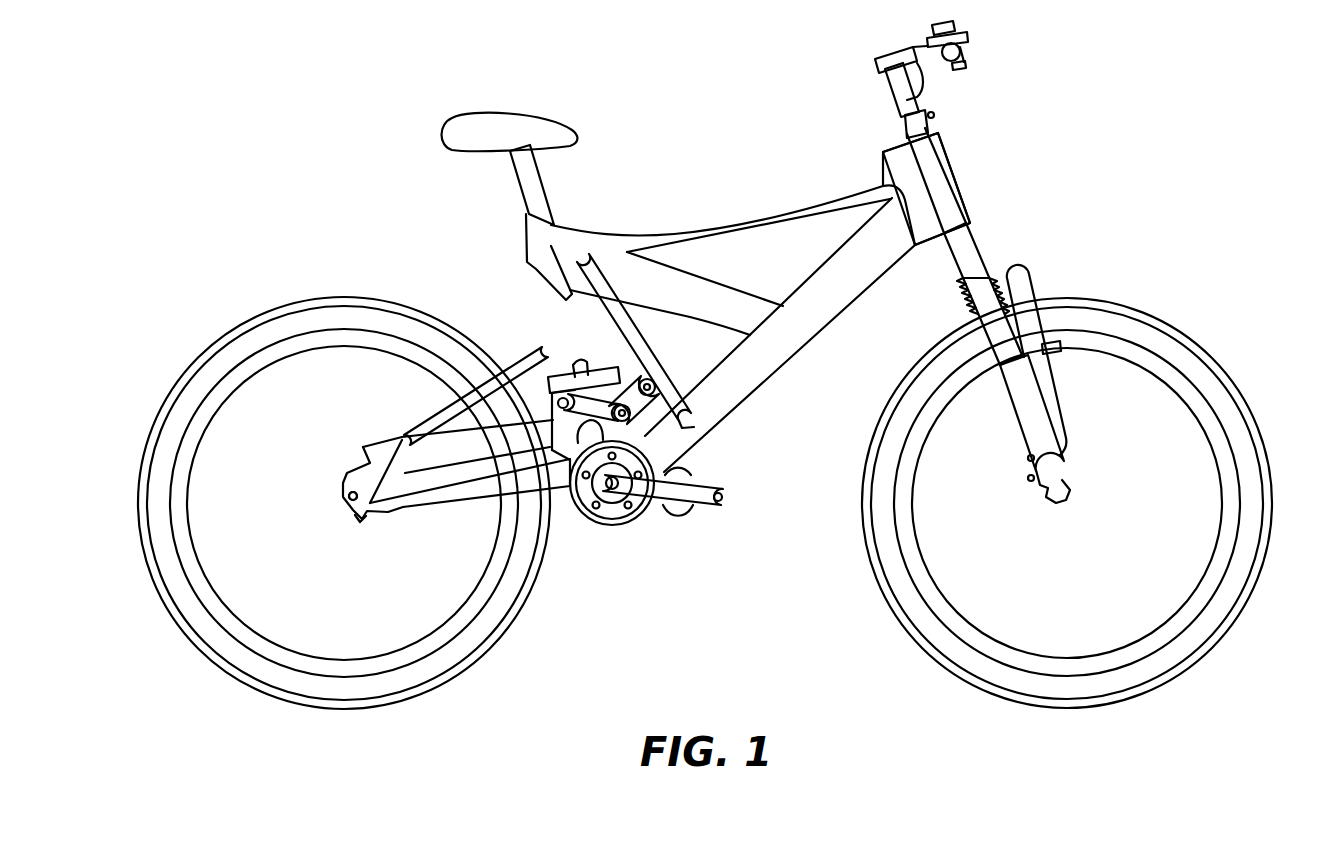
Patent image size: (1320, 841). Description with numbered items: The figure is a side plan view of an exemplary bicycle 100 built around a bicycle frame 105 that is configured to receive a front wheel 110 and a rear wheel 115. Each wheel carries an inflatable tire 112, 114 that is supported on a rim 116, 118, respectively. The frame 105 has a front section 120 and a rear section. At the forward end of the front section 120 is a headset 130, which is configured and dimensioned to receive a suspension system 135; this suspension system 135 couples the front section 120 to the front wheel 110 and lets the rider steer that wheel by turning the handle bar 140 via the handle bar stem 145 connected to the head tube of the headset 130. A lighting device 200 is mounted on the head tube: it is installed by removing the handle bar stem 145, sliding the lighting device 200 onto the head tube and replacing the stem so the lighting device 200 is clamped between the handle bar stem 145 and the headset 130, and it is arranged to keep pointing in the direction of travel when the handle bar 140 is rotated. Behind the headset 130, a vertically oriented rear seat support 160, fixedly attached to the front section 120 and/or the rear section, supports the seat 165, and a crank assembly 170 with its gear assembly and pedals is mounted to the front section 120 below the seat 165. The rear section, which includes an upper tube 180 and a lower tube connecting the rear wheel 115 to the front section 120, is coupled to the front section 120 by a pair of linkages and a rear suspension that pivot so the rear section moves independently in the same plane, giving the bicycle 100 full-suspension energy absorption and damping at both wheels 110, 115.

The bicycle 100 is at (300, 192).
The bicycle frame 105 is at (713, 229).
The front wheel 110 is at (1140, 297).
The inflatable tire 112 is at (1190, 357).
The inflatable tire 114 is at (246, 677).
The rear wheel 115 is at (196, 650).
The rim 116 is at (1218, 479).
The rim 118 is at (293, 661).
The front section 120 is at (835, 315).
The headset 130 is at (955, 172).
The suspension system 135 is at (980, 248).
The handlebar 140 is at (881, 57).
The handle bar stem 145 is at (968, 49).
The rear seat support 160 is at (541, 180).
The seat 165 is at (522, 112).
The crank assembly 170 is at (618, 527).
The upper tube 180 is at (392, 434).
The lighting device 200 is at (906, 124).